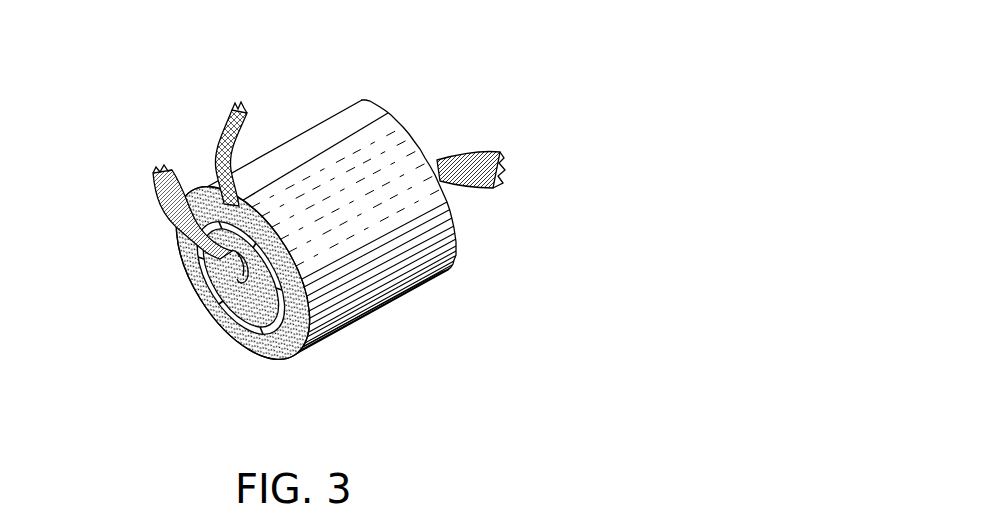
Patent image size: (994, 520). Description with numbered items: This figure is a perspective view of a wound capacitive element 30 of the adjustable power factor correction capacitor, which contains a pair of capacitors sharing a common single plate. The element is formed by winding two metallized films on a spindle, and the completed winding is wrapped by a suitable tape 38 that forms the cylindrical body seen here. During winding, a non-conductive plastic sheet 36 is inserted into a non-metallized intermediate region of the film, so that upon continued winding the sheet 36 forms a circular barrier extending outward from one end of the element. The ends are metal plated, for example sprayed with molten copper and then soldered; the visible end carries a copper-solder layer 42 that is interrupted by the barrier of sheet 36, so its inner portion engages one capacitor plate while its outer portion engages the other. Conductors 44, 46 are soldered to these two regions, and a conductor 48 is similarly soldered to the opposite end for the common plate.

The capacitive element 30 is at (370, 224).
The non-conductive sheet 36 is at (228, 313).
The tape 38 is at (397, 148).
The layer 42 is at (277, 350).
The conductor 44 is at (153, 190).
The conductor 46 is at (223, 123).
The conductor 48 is at (490, 186).